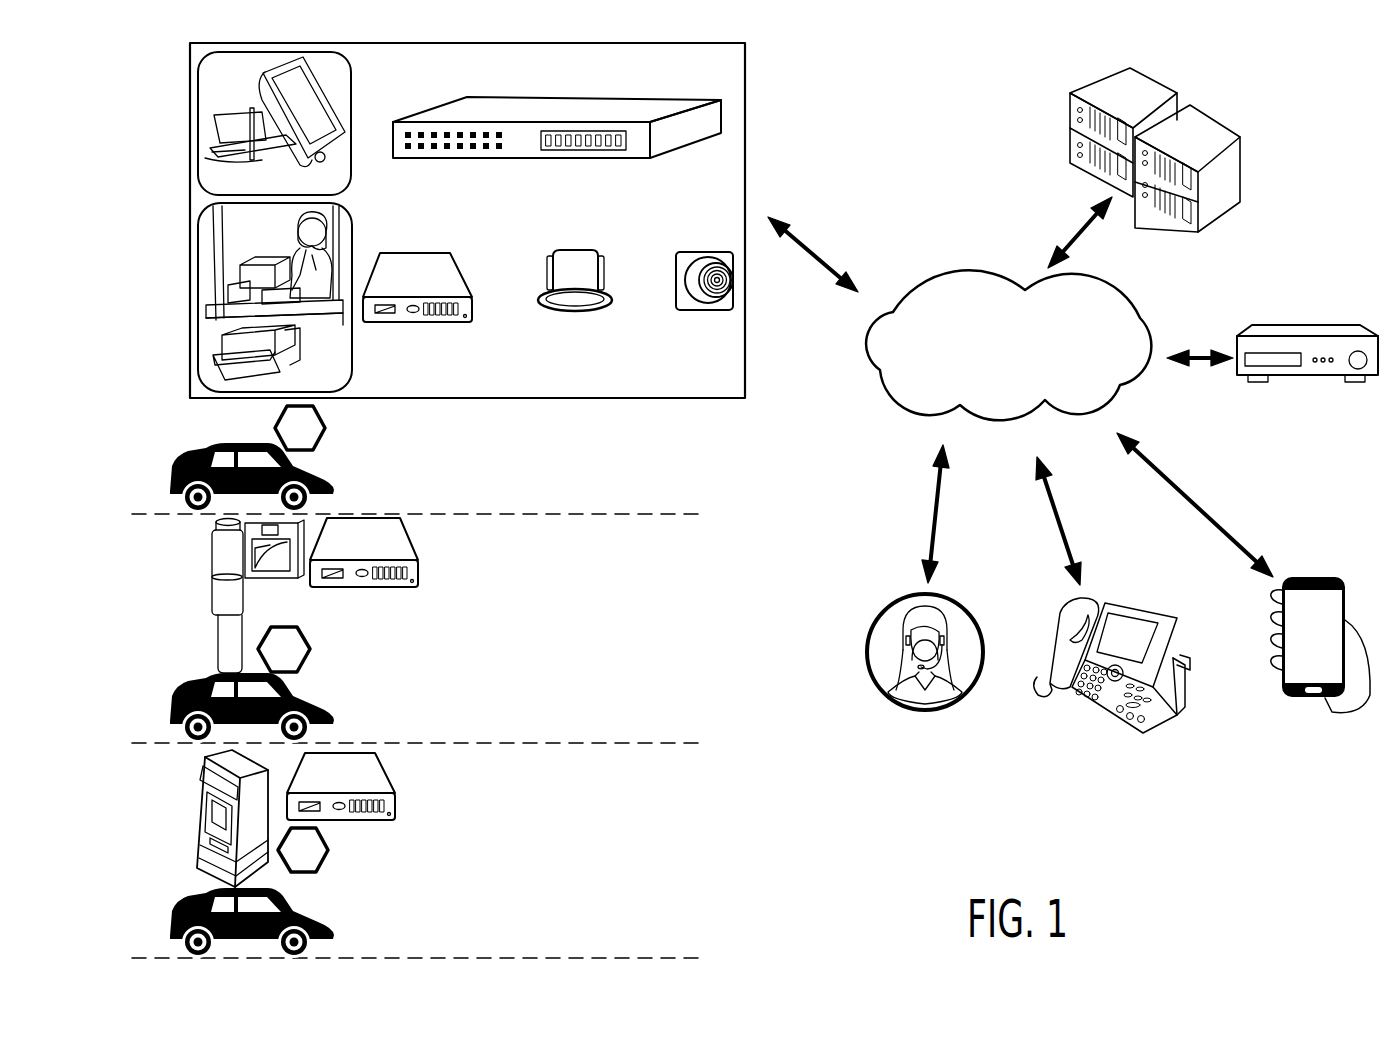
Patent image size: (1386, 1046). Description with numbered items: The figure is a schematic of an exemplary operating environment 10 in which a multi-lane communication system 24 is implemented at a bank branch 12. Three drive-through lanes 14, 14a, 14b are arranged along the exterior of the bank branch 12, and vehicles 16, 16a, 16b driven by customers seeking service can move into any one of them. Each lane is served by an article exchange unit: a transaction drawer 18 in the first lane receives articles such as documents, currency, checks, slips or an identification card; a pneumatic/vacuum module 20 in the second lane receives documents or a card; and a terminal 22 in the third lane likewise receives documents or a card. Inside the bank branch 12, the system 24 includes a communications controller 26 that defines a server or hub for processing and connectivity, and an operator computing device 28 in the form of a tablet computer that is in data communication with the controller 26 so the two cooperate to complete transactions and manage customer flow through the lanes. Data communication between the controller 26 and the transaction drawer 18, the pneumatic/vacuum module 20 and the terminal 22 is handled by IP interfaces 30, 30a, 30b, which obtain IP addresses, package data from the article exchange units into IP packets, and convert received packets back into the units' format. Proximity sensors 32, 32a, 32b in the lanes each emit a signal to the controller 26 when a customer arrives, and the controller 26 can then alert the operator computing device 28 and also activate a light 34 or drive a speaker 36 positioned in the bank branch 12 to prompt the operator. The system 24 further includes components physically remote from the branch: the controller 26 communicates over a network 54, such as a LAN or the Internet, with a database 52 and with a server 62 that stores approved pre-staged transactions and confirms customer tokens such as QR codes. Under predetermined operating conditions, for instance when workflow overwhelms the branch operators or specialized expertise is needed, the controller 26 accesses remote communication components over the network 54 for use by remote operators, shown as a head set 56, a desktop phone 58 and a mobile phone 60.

The operating environment 10 is at (1294, 96).
The bank branch 12 is at (746, 64).
The drive-through lane 14 is at (428, 494).
The drive-through lane 14a is at (430, 731).
The drive-through lane 14b is at (443, 951).
The vehicle 16 is at (183, 462).
The vehicle 16a is at (183, 692).
The vehicle 16b is at (182, 907).
The transaction drawer 18 is at (200, 347).
The pneumatic/vacuum module 20 is at (198, 587).
The terminal 22 is at (180, 805).
The multi-lane communication system 24 is at (1285, 857).
The communications controller 26 is at (592, 128).
The operator computing device 28 is at (360, 95).
The IP interface 30 is at (412, 274).
The IP interface 30a is at (393, 547).
The IP interface 30b is at (373, 772).
The proximity sensor 32 is at (318, 430).
The proximity sensor 32a is at (295, 655).
The proximity sensor 32b is at (313, 855).
The light 34 is at (687, 253).
The speaker 36 is at (575, 268).
The database 52 is at (1327, 338).
The network 54 is at (940, 285).
The head set 56 is at (916, 730).
The desktop phone 58 is at (1093, 733).
The mobile phone 60 is at (1317, 715).
The server 62 is at (1113, 87).